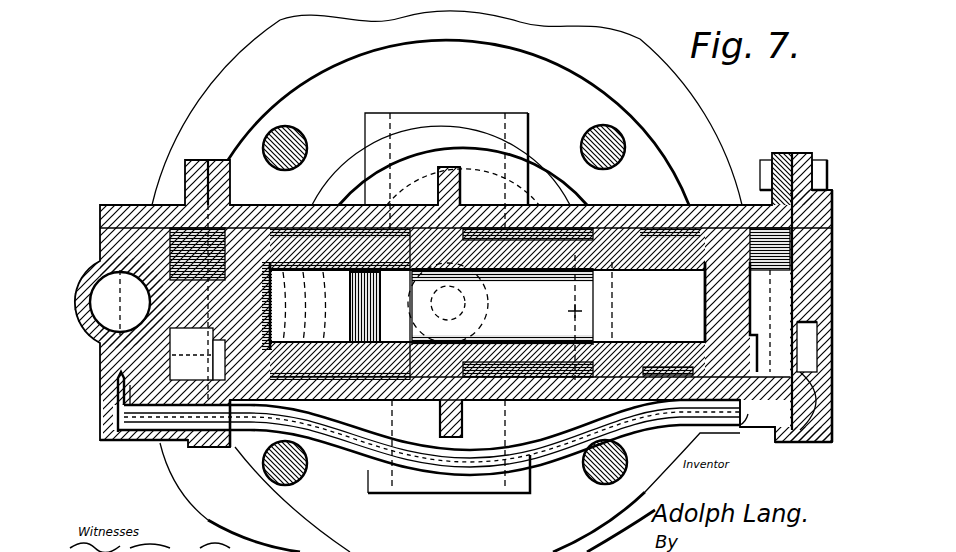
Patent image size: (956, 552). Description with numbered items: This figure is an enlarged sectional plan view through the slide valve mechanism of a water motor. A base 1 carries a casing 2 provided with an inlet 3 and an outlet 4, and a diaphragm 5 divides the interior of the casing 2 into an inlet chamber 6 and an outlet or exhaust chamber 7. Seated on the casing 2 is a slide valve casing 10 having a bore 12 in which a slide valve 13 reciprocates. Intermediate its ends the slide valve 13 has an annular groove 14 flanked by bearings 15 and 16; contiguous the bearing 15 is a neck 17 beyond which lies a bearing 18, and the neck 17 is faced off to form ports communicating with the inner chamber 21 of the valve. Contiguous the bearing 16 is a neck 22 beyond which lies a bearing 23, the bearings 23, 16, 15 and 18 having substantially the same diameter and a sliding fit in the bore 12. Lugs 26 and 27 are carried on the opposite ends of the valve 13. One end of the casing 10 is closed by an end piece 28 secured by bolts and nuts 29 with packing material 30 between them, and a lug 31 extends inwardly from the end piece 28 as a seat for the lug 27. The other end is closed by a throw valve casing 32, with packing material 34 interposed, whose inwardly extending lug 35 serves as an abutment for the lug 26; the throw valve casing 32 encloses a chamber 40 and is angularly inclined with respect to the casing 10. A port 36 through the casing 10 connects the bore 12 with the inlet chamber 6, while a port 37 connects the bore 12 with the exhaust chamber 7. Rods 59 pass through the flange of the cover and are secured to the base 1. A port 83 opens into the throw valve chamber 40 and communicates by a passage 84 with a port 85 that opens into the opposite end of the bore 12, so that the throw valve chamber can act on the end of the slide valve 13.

The base 1 is at (447, 281).
The casing 2 is at (540, 170).
The inlet 3 is at (480, 117).
The outlet 4 is at (488, 493).
The diaphragm 5 is at (463, 187).
The inlet chamber 6 is at (530, 198).
The outlet chamber 7 is at (420, 458).
The slide valve casing 10 is at (698, 205).
The bore 12 is at (790, 347).
The slide valve 13 is at (722, 289).
The annular groove 14 is at (480, 214).
The bearing 15 is at (632, 210).
The bearing 16 is at (434, 212).
The neck 17 is at (672, 367).
The bearing 18 is at (722, 222).
The inner chamber 21 is at (457, 303).
The neck 22 is at (303, 306).
The bearing 23 is at (250, 222).
The lug 26 is at (212, 296).
The lug 27 is at (763, 306).
The end piece 28 is at (800, 153).
The bolts and nuts 29 is at (822, 165).
The packing material 30 is at (792, 153).
The lug 31 is at (803, 289).
The throw valve casing 32 is at (105, 232).
The packing material 34 is at (209, 160).
The lug 35 is at (197, 354).
The port 36 is at (582, 311).
The port 37 is at (392, 312).
The chamber 40 is at (120, 302).
The rods 59 is at (290, 128).
The port 83 is at (115, 343).
The passage 84 is at (366, 456).
The port 85 is at (812, 442).